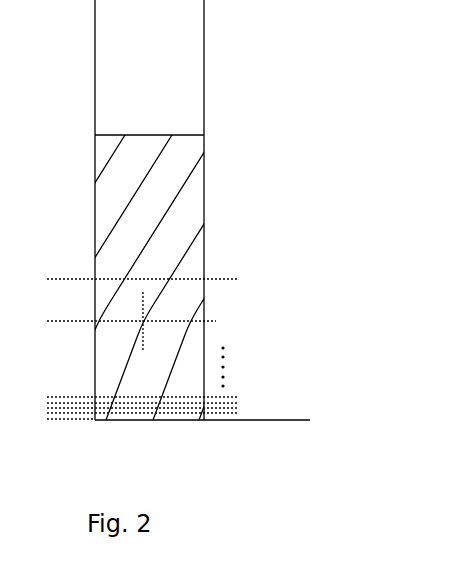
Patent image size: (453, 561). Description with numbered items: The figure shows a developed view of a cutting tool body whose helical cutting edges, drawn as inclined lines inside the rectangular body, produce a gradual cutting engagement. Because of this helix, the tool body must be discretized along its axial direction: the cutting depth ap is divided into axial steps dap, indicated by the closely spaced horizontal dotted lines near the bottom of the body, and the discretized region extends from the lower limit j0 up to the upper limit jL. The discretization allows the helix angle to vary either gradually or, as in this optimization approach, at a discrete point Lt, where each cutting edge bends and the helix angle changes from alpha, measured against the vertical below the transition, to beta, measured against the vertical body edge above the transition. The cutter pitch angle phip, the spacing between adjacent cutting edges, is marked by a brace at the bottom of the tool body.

The top of cutting zone j=L jL is at (21, 278).
The discrete transition point Lt is at (28, 322).
The bottom of cutting zone j=0 j0 is at (20, 420).
The helix angle alpha is at (158, 343).
The helix angle beta is at (181, 189).
The cutting depth ap is at (243, 279).
The axial step dap is at (248, 386).
The cutter pitch angle phip is at (195, 423).